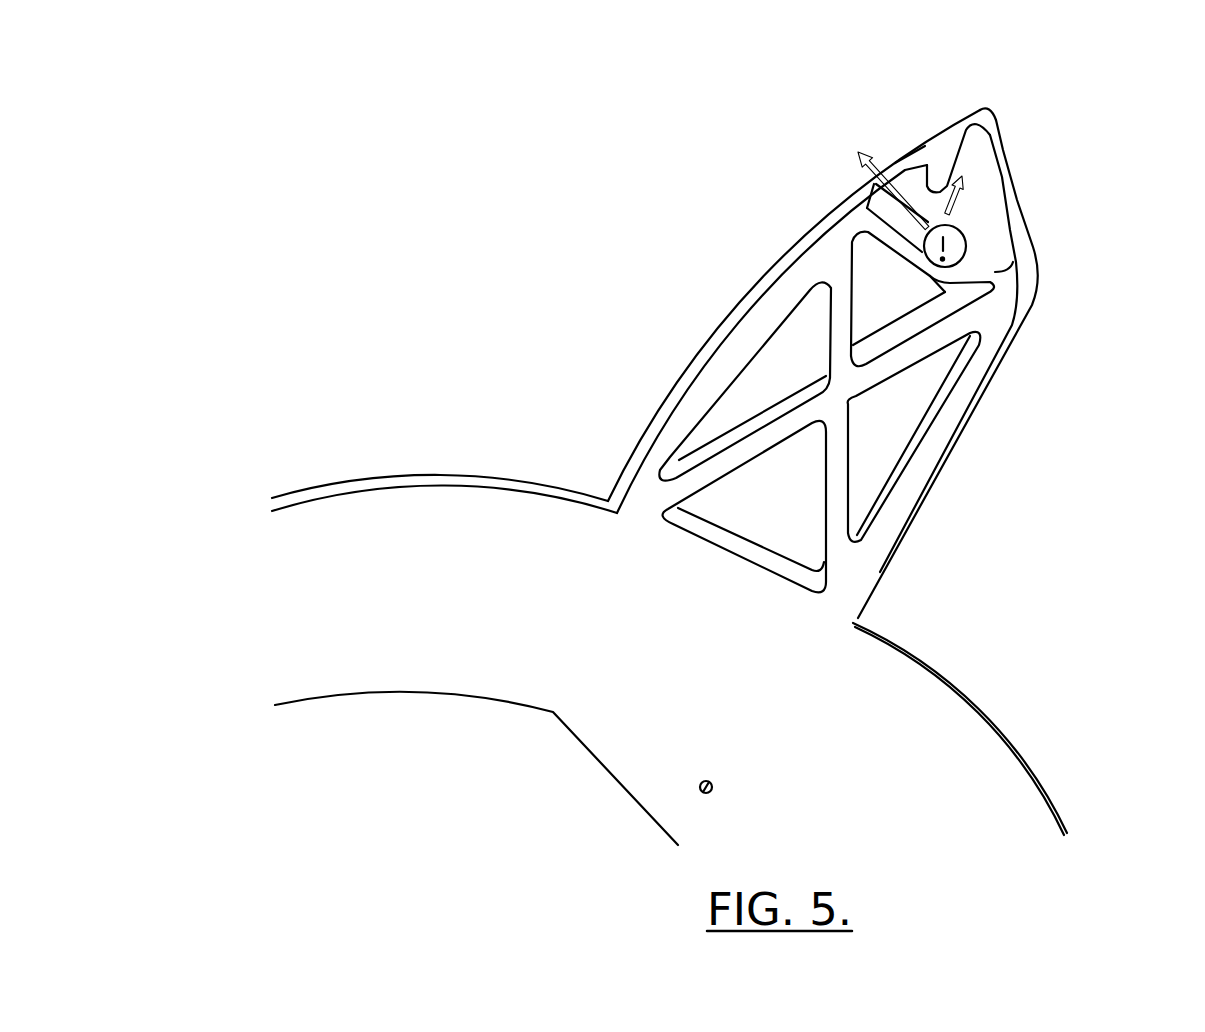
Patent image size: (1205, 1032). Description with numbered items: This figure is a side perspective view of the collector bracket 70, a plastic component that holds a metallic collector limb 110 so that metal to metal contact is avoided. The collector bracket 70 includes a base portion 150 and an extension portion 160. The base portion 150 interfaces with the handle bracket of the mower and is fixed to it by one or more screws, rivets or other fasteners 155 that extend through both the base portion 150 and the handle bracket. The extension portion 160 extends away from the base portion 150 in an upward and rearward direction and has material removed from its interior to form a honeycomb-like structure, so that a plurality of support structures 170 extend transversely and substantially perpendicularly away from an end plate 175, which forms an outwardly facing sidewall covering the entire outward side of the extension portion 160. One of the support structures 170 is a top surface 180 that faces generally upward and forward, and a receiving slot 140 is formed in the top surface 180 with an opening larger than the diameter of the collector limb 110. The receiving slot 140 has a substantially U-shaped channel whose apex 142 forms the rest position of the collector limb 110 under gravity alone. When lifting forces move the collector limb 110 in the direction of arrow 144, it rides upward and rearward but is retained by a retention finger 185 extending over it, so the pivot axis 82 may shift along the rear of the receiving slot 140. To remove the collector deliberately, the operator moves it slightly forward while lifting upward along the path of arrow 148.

The collector bracket 70 is at (478, 251).
The pivot axis 82 is at (944, 295).
The collector limb 110 is at (958, 222).
The receiving slot 140 is at (909, 148).
The apex 142 is at (992, 262).
The arrow 144 is at (960, 184).
The arrow 148 is at (880, 172).
The base portion 150 is at (393, 477).
The fasteners 155 is at (700, 778).
The extension portion 160 is at (932, 503).
The support structures 170 is at (857, 387).
The end plate 175 is at (757, 297).
The top surface 180 is at (810, 325).
The retention finger 185 is at (975, 148).